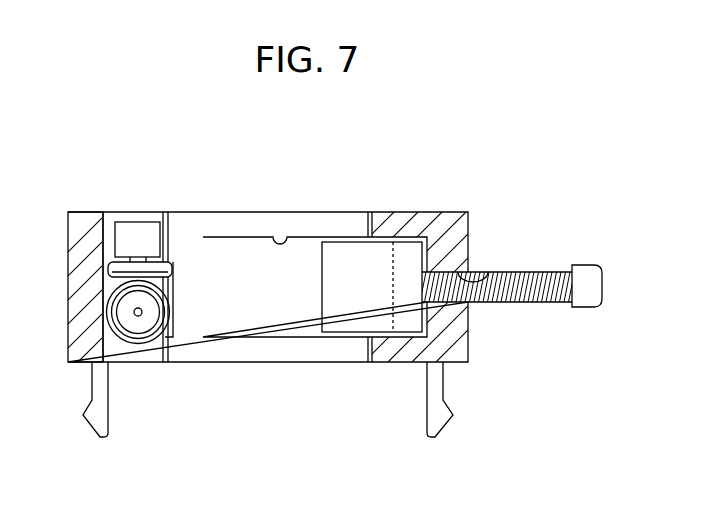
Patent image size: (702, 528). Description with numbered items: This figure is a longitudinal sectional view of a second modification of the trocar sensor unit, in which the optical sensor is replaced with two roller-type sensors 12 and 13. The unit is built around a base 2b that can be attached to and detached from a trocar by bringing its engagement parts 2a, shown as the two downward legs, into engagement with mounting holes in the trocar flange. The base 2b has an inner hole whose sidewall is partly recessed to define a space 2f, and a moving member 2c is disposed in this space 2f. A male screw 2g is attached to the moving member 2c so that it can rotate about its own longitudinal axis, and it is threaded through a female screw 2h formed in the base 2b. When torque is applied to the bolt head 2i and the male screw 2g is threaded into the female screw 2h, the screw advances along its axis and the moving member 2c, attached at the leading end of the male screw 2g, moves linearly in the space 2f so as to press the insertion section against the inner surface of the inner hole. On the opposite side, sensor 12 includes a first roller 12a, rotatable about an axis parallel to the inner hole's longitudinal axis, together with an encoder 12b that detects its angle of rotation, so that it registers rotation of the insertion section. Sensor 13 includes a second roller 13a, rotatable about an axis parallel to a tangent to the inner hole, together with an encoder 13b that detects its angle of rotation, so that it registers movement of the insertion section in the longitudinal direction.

The sensor 12 is at (105, 168).
The first roller 12a is at (173, 266).
The encoder 12b is at (137, 222).
The sensor 13 is at (180, 386).
The second roller 13a is at (173, 308).
The encoder 13b is at (147, 338).
The engagement parts 2a is at (91, 428).
The base 2b is at (422, 212).
The moving member 2c is at (345, 242).
The space 2f is at (290, 237).
The male screw 2g is at (537, 272).
The female screw 2h is at (488, 272).
The bolt head 2i is at (590, 307).